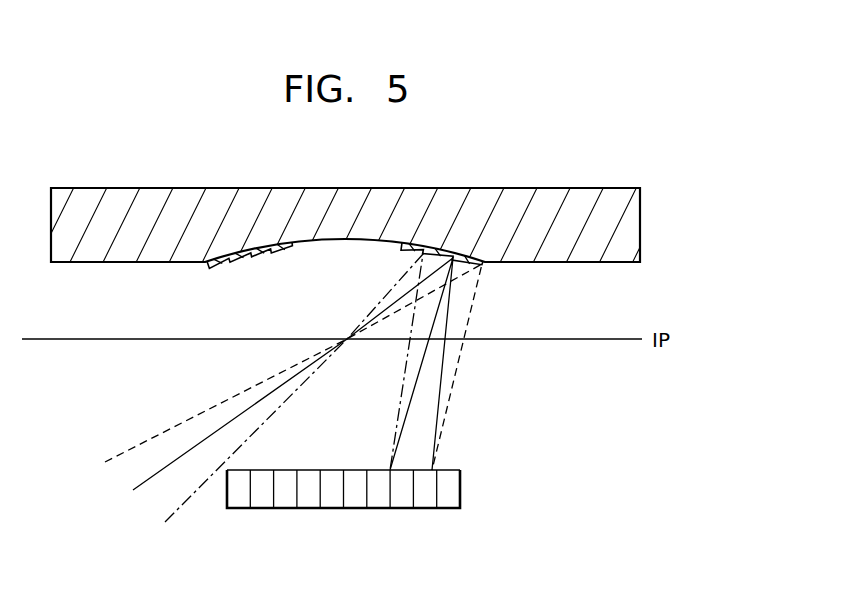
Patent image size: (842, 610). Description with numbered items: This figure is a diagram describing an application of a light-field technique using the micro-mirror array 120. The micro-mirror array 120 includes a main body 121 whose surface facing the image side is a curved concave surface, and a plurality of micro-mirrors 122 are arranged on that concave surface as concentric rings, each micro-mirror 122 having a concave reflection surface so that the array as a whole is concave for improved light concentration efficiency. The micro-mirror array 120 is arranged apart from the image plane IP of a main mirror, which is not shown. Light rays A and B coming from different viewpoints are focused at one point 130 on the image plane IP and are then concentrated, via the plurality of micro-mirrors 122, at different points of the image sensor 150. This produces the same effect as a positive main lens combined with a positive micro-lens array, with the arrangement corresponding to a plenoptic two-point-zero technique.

The micro-mirror array 120 is at (368, 227).
The main body 121 is at (637, 218).
The micro-mirrors 122 is at (412, 255).
The point 130 is at (346, 338).
The image sensor 150 is at (462, 489).